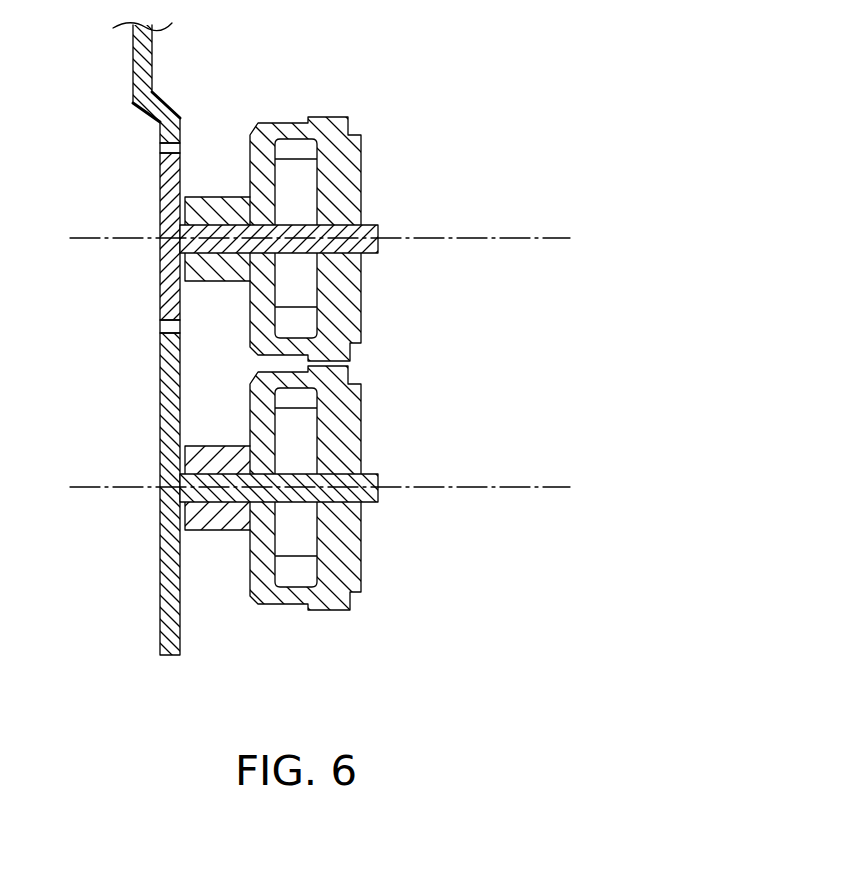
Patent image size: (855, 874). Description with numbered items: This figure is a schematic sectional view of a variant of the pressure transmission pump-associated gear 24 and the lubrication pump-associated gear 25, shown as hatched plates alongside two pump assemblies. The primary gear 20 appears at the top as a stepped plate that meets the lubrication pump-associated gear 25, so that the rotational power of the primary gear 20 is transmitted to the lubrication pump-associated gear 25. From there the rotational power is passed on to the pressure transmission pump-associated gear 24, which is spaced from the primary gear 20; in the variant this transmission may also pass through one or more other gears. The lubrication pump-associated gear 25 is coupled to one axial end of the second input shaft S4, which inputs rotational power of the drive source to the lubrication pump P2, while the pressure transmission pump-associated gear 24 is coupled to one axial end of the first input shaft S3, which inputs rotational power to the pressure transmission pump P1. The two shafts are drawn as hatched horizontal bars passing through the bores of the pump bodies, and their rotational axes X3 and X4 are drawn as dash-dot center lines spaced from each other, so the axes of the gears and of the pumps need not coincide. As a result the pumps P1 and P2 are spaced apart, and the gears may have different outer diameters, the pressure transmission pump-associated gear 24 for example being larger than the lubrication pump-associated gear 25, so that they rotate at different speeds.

The primary gear 20 is at (132, 66).
The pressure transmission pump-associated gear 24 is at (160, 585).
The lubrication pump-associated gear 25 is at (160, 283).
The pressure transmission pump P1 is at (355, 495).
The lubrication pump P2 is at (357, 143).
The first input shaft S3 is at (320, 489).
The second input shaft S4 is at (368, 225).
The rotational axis X3 is at (510, 238).
The rotational axis X4 is at (320, 441).